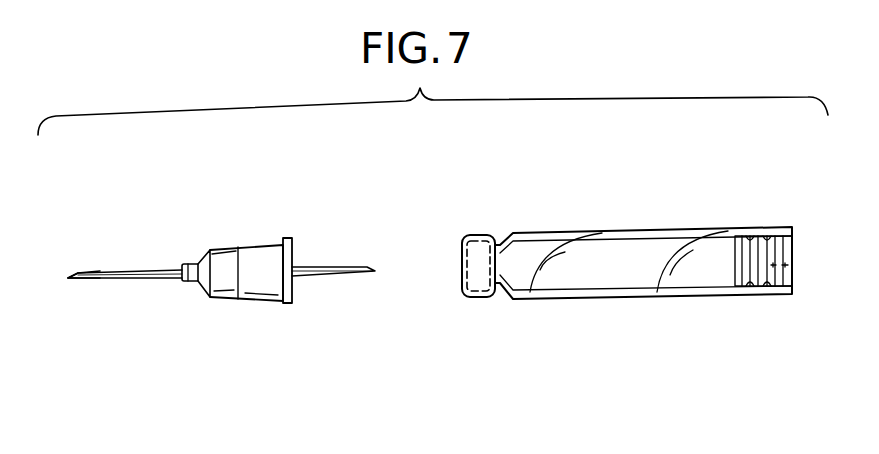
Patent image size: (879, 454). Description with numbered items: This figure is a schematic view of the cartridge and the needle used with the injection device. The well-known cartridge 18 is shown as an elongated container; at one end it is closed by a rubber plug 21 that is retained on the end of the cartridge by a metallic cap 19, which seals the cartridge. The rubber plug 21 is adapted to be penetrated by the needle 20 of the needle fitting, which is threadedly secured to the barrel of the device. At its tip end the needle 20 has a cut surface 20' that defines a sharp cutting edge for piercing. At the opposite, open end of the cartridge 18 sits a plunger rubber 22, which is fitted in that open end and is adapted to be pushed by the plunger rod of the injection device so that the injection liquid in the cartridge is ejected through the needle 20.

The cartridge 18 is at (633, 228).
The metallic cap 19 is at (478, 234).
The needle 20 is at (221, 331).
The cut surface 20' is at (77, 233).
The rubber plug 21 is at (478, 277).
The plunger rubber 22 is at (787, 267).